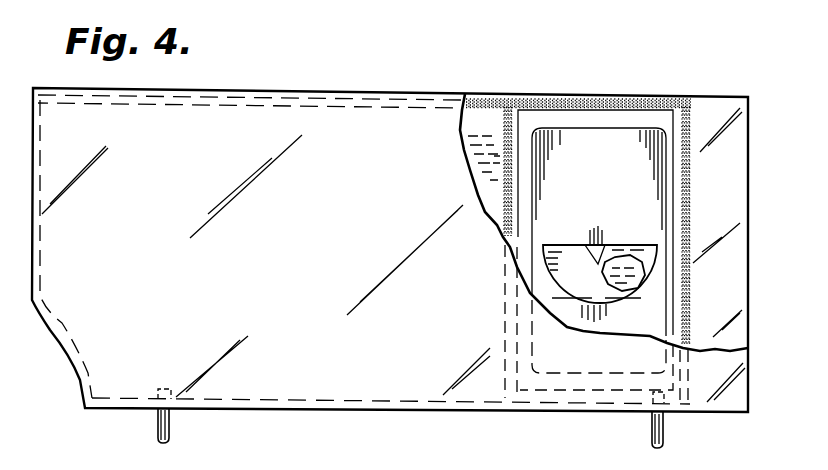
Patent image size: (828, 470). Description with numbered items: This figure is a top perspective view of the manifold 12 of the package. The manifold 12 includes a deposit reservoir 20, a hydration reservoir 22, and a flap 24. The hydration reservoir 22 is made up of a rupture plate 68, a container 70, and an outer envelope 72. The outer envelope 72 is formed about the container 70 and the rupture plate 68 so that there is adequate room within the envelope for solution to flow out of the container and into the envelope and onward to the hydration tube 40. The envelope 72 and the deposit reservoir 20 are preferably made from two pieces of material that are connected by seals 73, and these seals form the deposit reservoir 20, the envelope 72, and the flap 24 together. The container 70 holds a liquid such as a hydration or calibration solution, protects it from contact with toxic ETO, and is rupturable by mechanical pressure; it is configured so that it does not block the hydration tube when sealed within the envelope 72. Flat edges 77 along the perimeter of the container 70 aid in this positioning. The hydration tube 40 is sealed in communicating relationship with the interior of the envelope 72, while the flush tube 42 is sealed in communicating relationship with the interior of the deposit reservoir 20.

The manifold 12 is at (370, 92).
The deposit reservoir 20 is at (262, 104).
The hydration reservoir 22 is at (630, 153).
The flap 24 is at (718, 96).
The hydration tube 40 is at (664, 432).
The flush tube 42 is at (171, 430).
The rupture plate 68 is at (599, 147).
The container 70 is at (592, 290).
The outer envelope 72 is at (547, 395).
The seals 73 is at (364, 403).
The flat edges 77 is at (533, 124).